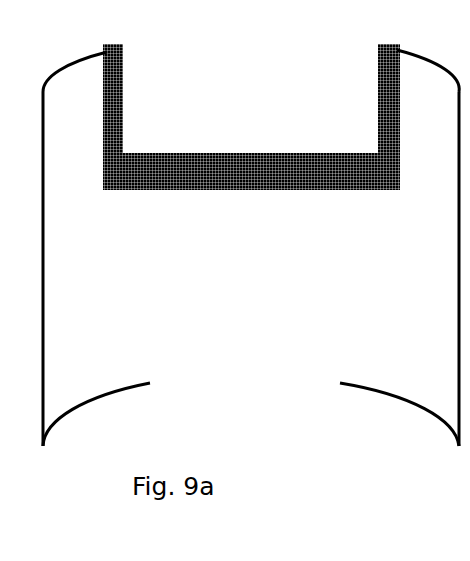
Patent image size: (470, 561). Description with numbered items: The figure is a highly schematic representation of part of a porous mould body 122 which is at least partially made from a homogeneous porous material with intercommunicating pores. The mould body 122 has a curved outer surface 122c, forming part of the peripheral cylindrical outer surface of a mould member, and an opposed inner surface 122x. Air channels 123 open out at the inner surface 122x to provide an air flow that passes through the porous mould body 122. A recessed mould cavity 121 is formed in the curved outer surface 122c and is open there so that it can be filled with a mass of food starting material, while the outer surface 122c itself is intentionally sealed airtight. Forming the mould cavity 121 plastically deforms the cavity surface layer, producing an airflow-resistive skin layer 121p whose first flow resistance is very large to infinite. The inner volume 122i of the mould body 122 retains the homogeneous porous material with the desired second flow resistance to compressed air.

The recessed mould cavity 121 is at (250, 86).
The plastically deformed skin layer 121p is at (251, 117).
The porous mould body 122 is at (373, 403).
The inner volume 122i is at (251, 245).
The curved outer surface 122c is at (433, 68).
The inner surface 122x is at (430, 408).
The air channels 123 is at (247, 381).